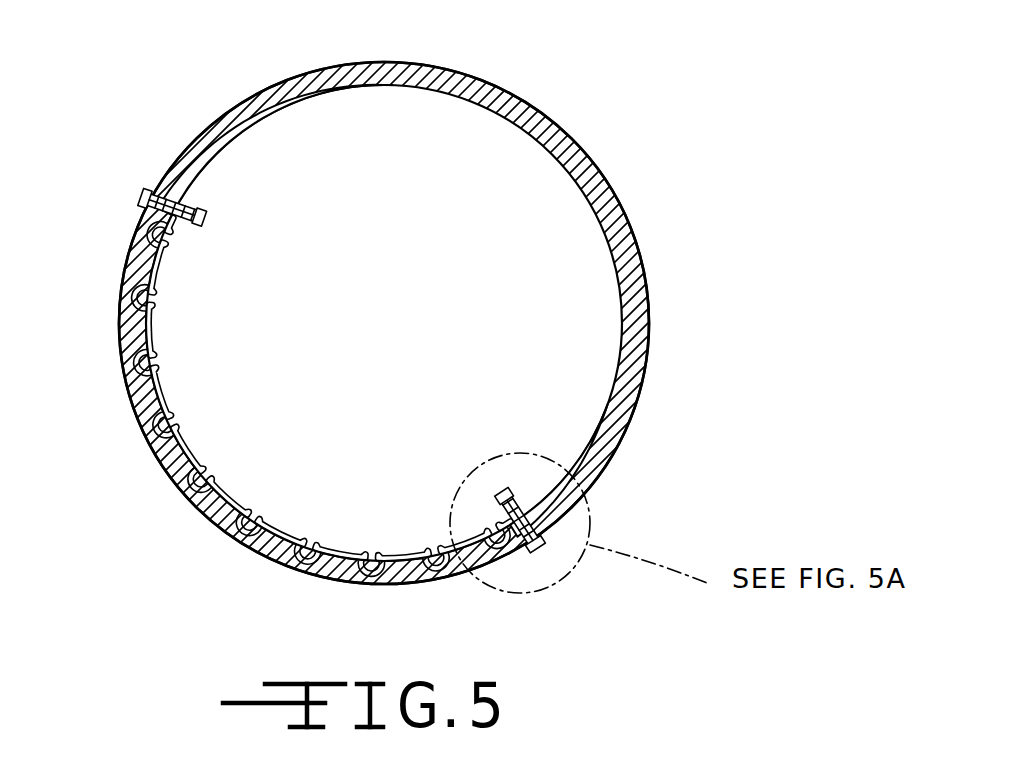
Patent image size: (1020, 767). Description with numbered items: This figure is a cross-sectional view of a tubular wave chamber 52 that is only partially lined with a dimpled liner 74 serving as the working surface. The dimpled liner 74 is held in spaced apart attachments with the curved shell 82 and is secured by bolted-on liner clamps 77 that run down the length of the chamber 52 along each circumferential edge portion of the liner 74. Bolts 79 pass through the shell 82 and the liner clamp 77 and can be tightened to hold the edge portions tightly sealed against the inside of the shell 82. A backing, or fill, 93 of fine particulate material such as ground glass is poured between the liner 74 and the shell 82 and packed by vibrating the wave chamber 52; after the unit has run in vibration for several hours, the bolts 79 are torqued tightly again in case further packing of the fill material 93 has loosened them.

The tubular wave chamber 52 is at (650, 262).
The backing material 93 is at (140, 372).
The shell 82 is at (284, 93).
The dimpled liner 74 is at (196, 408).
The liner clamp 77 is at (195, 208).
The bolts 79 is at (185, 222).